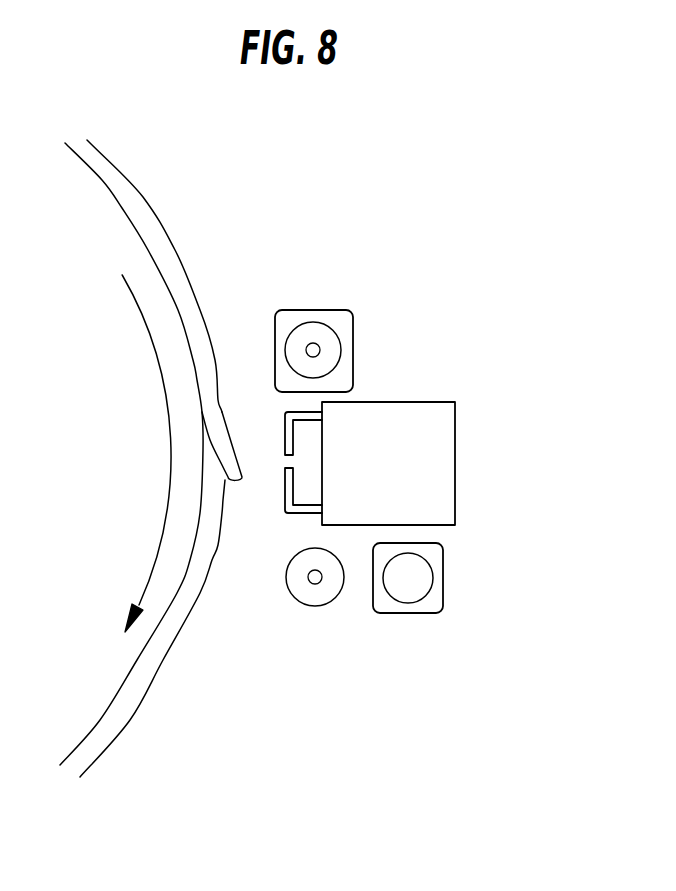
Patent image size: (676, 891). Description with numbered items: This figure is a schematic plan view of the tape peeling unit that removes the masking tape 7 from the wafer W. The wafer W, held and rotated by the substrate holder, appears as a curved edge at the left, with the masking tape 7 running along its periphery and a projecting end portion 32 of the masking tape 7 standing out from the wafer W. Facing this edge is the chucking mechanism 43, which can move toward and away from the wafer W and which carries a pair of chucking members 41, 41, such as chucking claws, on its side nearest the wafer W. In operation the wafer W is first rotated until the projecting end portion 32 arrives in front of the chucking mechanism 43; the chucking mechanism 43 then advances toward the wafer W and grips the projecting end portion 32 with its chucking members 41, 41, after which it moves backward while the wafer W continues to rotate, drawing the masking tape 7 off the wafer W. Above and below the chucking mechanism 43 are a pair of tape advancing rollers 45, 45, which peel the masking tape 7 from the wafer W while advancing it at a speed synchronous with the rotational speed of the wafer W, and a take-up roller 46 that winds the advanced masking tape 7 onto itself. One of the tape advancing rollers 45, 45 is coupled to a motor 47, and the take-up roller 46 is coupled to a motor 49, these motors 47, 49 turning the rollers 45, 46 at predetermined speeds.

The masking tape 7 is at (168, 446).
The wafer W is at (158, 685).
The projecting end portion 32 is at (241, 481).
The chucking member 41 is at (284, 433).
The chucking mechanism 43 is at (408, 401).
The tape advancing roller 45 is at (318, 322).
The take-up roller 46 is at (403, 603).
The motor 47 is at (290, 310).
The motor 49 is at (443, 587).